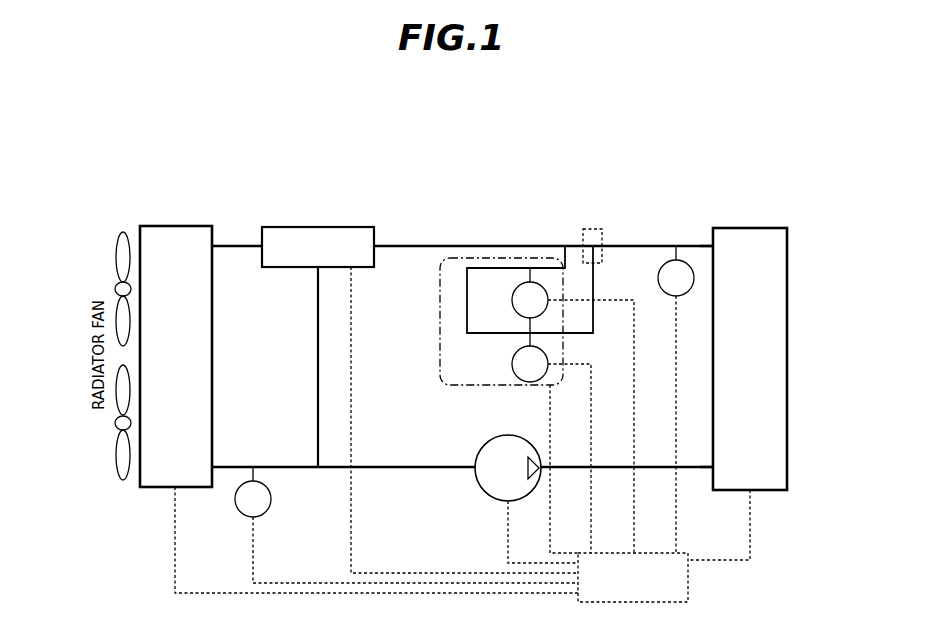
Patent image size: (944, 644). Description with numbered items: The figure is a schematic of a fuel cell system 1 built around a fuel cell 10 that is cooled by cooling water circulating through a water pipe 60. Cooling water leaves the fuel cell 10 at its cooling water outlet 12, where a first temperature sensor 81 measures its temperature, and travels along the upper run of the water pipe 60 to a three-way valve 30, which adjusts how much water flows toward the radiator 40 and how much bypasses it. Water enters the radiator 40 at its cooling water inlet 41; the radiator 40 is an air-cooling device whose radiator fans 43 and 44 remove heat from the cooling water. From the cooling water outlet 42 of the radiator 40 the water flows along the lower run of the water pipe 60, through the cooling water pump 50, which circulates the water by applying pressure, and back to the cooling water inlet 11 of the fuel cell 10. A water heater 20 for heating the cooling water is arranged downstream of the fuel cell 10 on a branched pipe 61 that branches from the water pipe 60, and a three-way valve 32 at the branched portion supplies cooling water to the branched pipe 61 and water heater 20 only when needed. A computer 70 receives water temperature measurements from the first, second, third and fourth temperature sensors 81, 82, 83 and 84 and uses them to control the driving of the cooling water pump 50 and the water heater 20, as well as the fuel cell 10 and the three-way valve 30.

The fuel cell system 1 is at (818, 116).
The fuel cell 10 is at (775, 267).
The cooling water inlet 11 is at (710, 470).
The cooling water outlet 12 is at (711, 244).
The water heater 20 is at (454, 256).
The three-way valve 30 is at (322, 225).
The three-way valve 32 is at (592, 227).
The radiator 40 is at (178, 240).
The cooling water inlet 41 is at (220, 244).
The cooling water outlet 42 is at (218, 464).
The radiator fan 43 is at (116, 288).
The radiator fan 44 is at (115, 424).
The cooling water pump 50 is at (478, 482).
The water pipe 60 is at (392, 244).
The branched pipe 61 is at (596, 287).
The computer 70 is at (690, 576).
The first temperature sensor 81 is at (685, 268).
The second temperature sensor 82 is at (545, 376).
The third temperature sensor 83 is at (517, 288).
The fourth temperature sensor 84 is at (237, 504).